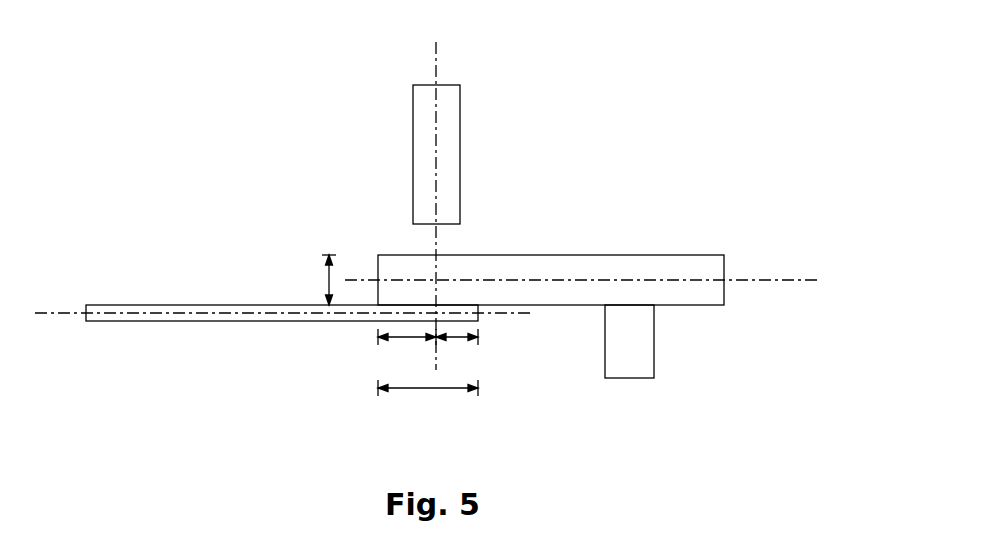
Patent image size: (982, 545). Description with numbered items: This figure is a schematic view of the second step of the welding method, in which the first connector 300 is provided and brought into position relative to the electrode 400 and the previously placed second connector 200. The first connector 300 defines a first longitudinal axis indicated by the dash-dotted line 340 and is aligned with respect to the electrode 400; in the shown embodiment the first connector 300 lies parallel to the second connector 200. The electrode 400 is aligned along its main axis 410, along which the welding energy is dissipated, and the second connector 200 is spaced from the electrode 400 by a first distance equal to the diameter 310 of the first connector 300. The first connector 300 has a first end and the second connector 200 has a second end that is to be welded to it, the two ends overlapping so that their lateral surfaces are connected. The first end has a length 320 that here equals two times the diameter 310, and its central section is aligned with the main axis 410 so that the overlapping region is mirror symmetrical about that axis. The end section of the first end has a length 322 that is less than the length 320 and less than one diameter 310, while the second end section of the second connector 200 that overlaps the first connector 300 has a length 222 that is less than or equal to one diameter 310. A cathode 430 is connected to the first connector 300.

The second connector 200 is at (223, 322).
The length of the second end section 222 is at (452, 338).
The first connector 300 is at (630, 268).
The diameter of the first connector 310 is at (329, 284).
The length of the first end 320 is at (428, 388).
The length of the end section of the first end 322 is at (405, 338).
The first longitudinal axis 340 is at (808, 283).
The electrode 400 is at (460, 140).
The main axis 410 is at (436, 60).
The cathode 430 is at (655, 345).